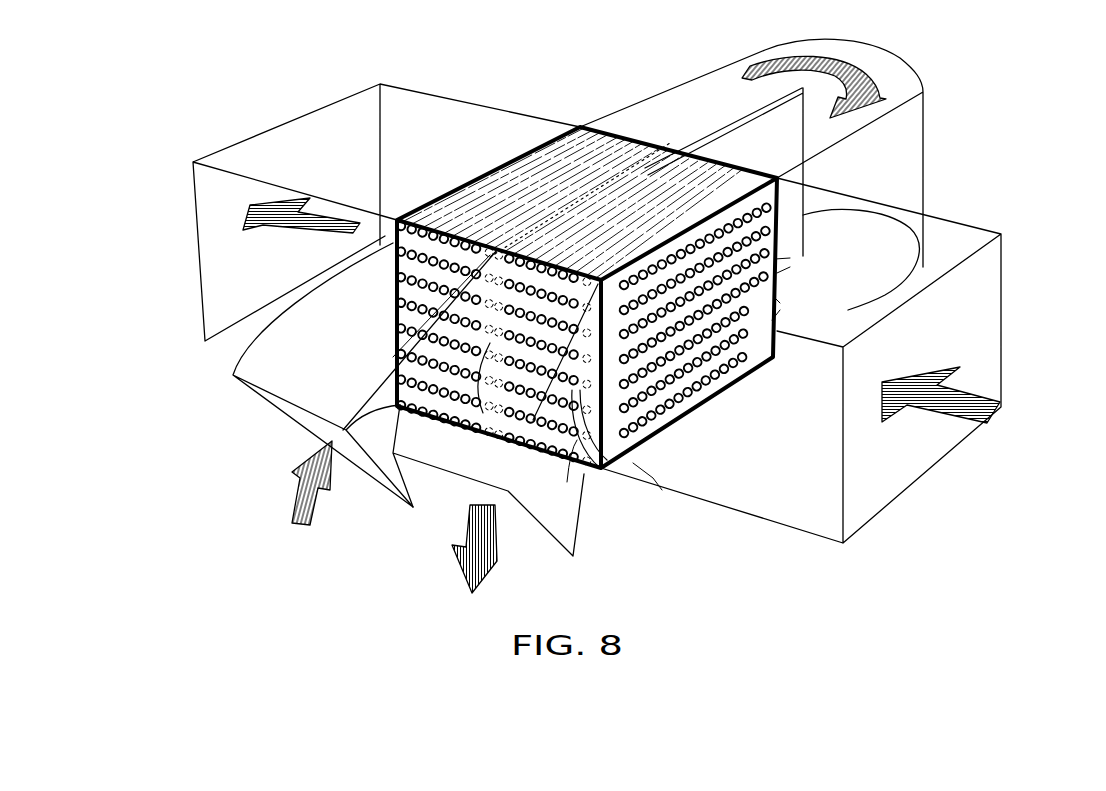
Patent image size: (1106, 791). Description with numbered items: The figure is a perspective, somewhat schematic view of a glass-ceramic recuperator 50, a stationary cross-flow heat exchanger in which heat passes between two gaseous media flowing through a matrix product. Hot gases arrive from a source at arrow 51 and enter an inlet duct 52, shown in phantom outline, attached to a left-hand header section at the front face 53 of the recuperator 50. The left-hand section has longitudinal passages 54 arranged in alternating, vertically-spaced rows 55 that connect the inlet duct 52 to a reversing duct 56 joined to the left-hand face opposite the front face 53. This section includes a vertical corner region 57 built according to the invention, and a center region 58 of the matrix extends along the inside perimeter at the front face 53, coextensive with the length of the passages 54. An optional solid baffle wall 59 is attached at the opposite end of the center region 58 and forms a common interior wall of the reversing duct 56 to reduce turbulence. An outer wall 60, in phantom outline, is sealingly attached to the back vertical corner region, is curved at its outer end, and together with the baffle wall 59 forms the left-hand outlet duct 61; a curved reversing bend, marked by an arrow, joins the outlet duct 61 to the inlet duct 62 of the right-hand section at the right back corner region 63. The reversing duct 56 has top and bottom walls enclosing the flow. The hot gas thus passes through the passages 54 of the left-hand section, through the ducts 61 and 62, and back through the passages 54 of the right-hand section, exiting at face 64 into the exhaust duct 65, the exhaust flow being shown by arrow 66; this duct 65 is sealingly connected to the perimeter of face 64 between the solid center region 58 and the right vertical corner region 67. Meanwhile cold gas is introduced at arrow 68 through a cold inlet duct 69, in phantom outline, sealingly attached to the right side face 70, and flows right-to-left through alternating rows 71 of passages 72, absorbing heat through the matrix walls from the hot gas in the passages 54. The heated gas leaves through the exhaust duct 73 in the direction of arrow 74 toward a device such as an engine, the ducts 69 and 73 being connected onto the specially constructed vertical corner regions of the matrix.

The glass-ceramic recuperator 50 is at (588, 301).
The hot gas inlet arrow 51 is at (302, 526).
The inlet duct 52 is at (299, 352).
The front face 53 is at (395, 301).
The longitudinal passages 54 is at (436, 232).
The vertically-spaced rows 55 is at (416, 262).
The reversing duct 56 is at (716, 68).
The vertical corner region 57 is at (393, 313).
The center region 58 is at (652, 168).
The solid baffle wall 59 is at (800, 88).
The outer wall 60 is at (870, 48).
The left-hand outlet duct 61 is at (702, 122).
The inlet duct 62 is at (848, 183).
The right back corner region 63 is at (790, 258).
The face 64 is at (577, 440).
The exhaust duct 65 is at (470, 501).
The outlet flow arrow 66 is at (493, 512).
The right vertical corner region 67 is at (662, 490).
The cold gas inlet arrow 68 is at (1001, 406).
The cold inlet duct 69 is at (819, 451).
The right side face 70 is at (790, 267).
The alternating rows 71 is at (780, 310).
The passages 72 is at (780, 303).
The exhaust duct 73 is at (351, 184).
The heated gas outlet arrow 74 is at (331, 236).